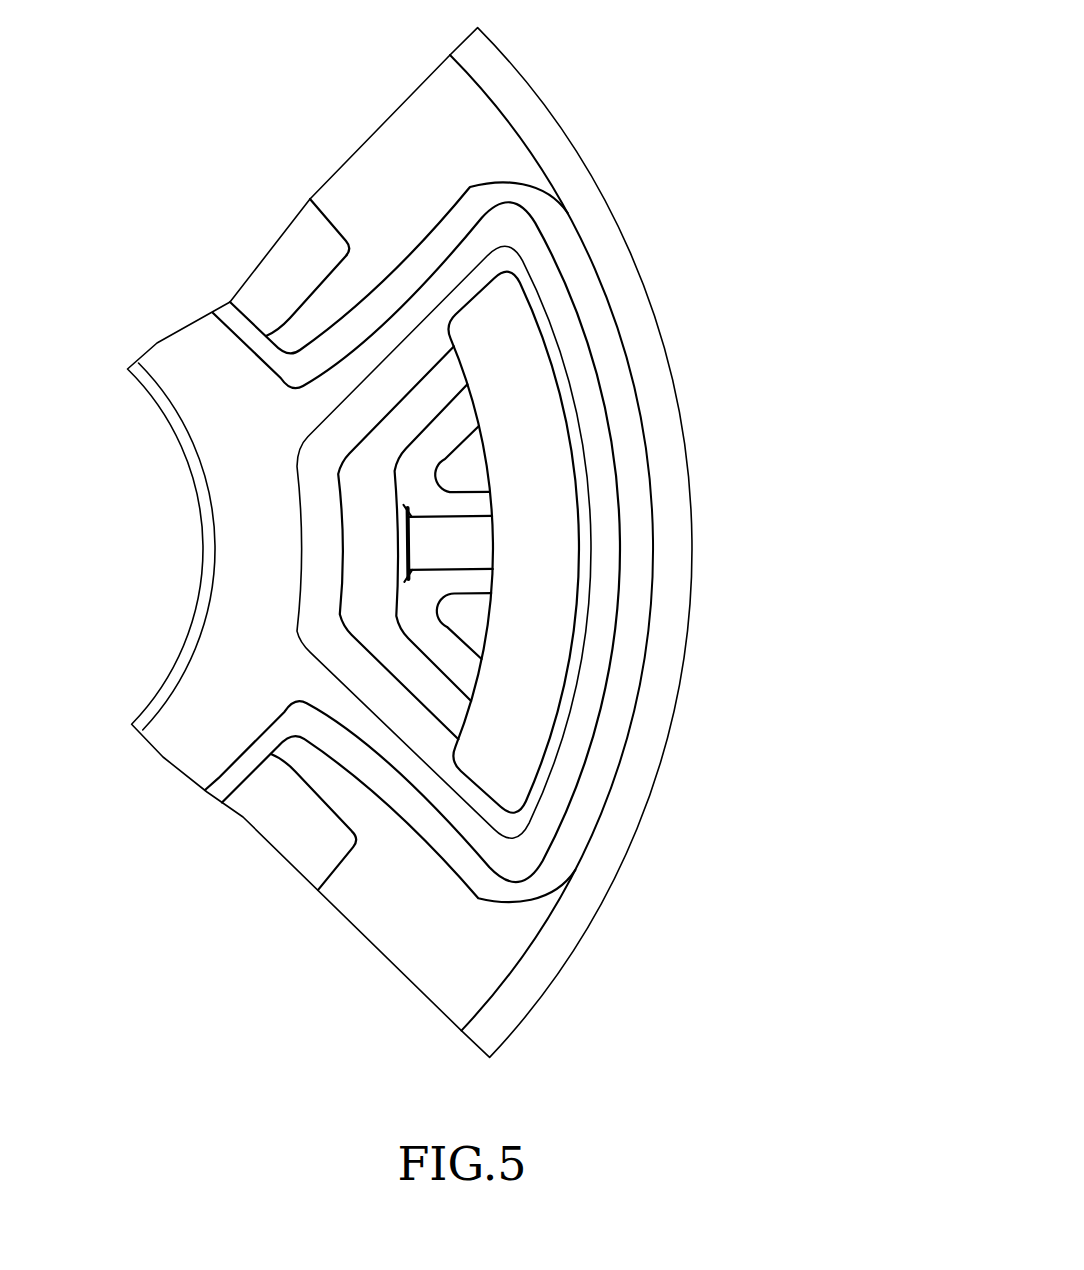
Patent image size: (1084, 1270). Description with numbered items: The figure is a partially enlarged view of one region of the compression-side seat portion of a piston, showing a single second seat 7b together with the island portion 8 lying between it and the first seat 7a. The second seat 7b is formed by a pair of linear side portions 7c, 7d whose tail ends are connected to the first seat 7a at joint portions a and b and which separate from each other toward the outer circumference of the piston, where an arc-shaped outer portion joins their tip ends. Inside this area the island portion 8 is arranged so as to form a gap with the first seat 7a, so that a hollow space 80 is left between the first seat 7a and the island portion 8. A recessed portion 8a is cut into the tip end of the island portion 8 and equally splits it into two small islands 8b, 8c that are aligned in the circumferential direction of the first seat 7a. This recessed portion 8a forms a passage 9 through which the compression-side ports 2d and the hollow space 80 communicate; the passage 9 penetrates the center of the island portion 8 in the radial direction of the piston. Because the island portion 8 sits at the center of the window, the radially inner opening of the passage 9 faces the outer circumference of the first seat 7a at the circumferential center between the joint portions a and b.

The compression-side port 2d is at (508, 748).
The first seat 7a is at (228, 612).
The second seat 7b is at (571, 261).
The side portion 7c is at (425, 287).
The side portion 7d is at (413, 793).
The island portion 8 is at (505, 432).
The recessed portion 8a is at (477, 535).
The small island 8b is at (478, 480).
The small island 8c is at (477, 625).
The passage 9 is at (506, 560).
The hollow space 80 is at (353, 490).
The joint portion a is at (285, 420).
The joint portion b is at (293, 670).